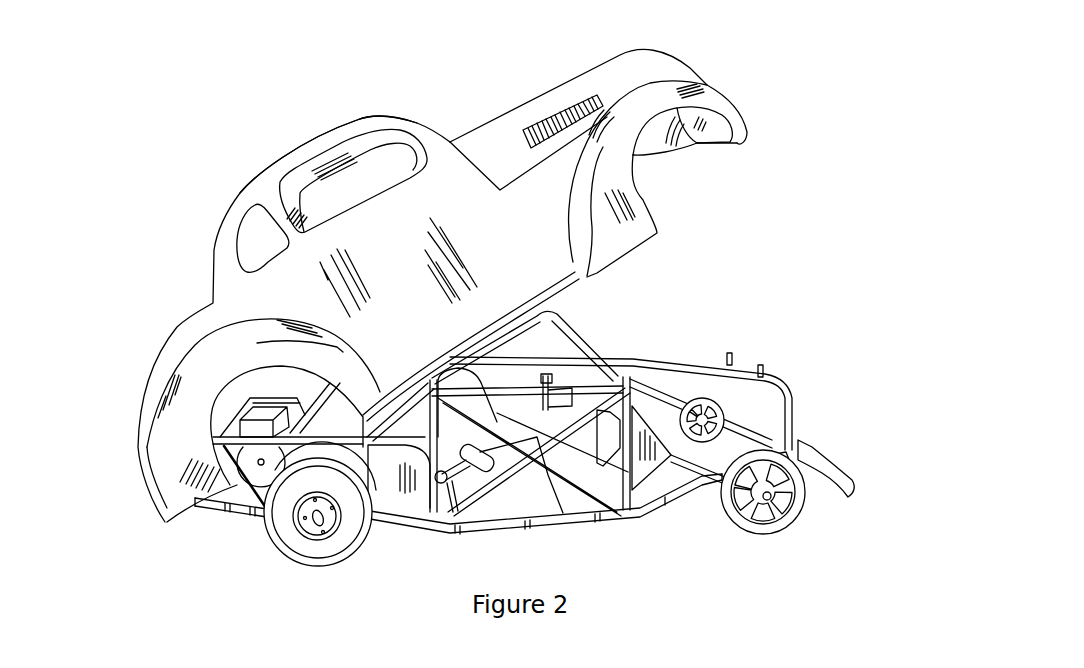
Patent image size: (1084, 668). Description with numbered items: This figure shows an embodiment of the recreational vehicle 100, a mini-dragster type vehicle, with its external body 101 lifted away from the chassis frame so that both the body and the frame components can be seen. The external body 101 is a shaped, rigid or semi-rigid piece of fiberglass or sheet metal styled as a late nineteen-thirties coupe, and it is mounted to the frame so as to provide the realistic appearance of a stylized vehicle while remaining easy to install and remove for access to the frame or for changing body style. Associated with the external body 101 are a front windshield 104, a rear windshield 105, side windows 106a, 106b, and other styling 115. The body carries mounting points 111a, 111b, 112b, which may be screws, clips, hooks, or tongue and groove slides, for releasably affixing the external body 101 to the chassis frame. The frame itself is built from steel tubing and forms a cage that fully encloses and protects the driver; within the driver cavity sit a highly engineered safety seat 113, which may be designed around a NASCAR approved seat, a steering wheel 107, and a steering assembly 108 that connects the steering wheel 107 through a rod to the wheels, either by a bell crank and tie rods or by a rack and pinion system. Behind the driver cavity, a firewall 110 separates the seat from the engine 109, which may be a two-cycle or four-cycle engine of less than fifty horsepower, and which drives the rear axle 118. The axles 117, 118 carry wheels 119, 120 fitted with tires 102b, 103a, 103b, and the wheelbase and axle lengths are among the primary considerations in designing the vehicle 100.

The recreational vehicle 100 is at (118, 70).
The external body 101 is at (753, 122).
The tire 102b is at (305, 560).
The tire 103a is at (700, 407).
The tire 103b is at (770, 534).
The front windshield 104 is at (430, 130).
The rear windshield 105 is at (213, 254).
The side window 106a is at (363, 173).
The side window 106b is at (307, 177).
The steering wheel 107 is at (600, 377).
The steering assembly 108 is at (770, 465).
The engine 109 is at (257, 475).
The firewall 110 is at (410, 497).
The mounting point 111a is at (733, 358).
The mounting point 111b is at (760, 370).
The mounting point 112b is at (168, 507).
The safety seat 113 is at (607, 510).
The styling 115 is at (548, 127).
The axle 117 is at (797, 443).
The rear axle 118 is at (321, 523).
The wheel 119 is at (300, 523).
The wheel 120 is at (783, 508).